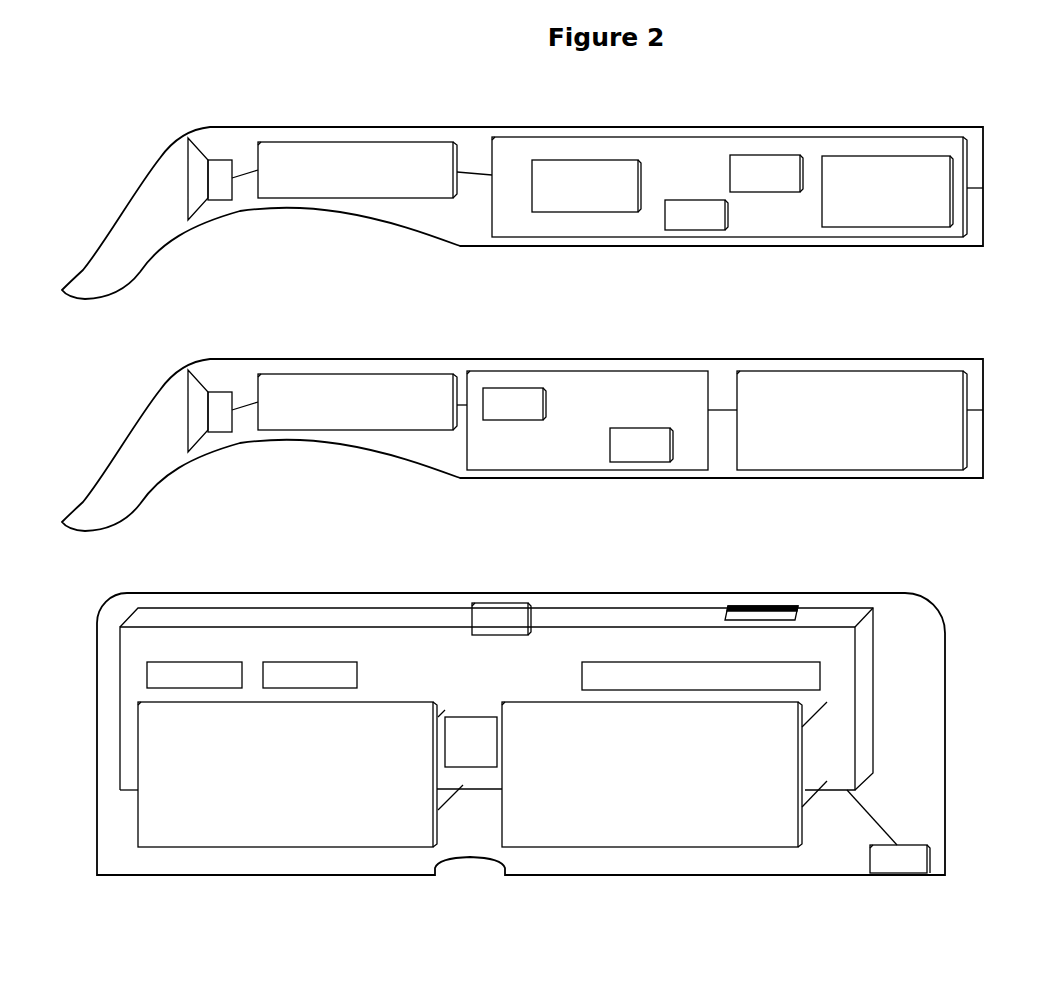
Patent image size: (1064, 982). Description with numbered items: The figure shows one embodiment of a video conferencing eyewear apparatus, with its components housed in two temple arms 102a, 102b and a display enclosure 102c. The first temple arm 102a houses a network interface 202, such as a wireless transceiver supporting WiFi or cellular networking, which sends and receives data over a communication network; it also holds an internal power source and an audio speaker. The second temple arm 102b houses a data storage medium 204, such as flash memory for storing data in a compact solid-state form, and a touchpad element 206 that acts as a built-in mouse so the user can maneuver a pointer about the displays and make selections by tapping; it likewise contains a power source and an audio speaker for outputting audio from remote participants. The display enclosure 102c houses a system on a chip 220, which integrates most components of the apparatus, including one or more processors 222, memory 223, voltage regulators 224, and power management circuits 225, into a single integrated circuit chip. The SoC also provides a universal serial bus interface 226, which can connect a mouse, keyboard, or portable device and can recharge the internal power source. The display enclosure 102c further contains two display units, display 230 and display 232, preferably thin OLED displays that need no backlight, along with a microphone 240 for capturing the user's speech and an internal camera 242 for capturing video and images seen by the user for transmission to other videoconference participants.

The temple arm 102a is at (977, 116).
The temple arm 102b is at (977, 346).
The display enclosure 102c is at (908, 593).
The network interface 202 is at (666, 181).
The data storage medium 204 is at (539, 448).
The touchpad element 206 is at (842, 431).
The system on a chip (SoC) 220 is at (452, 701).
The processor 222 is at (453, 753).
The memory 223 is at (682, 687).
The voltage regulator 224 is at (176, 686).
The power management circuit 225 is at (292, 686).
The universal serial bus (USB) interface 226 is at (768, 606).
The display 230 is at (269, 785).
The display 232 is at (652, 785).
The microphone 240 is at (881, 871).
The internal camera 242 is at (482, 631).